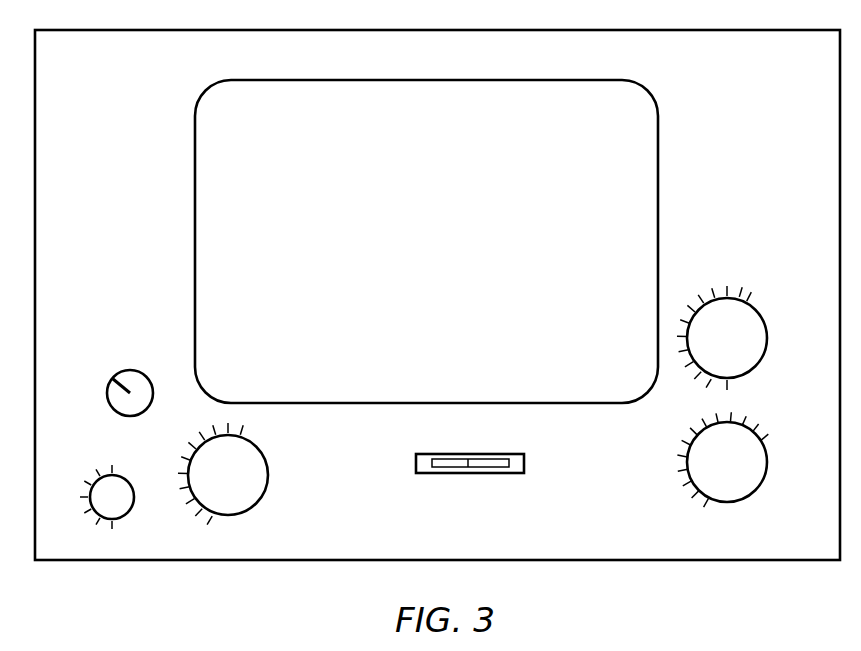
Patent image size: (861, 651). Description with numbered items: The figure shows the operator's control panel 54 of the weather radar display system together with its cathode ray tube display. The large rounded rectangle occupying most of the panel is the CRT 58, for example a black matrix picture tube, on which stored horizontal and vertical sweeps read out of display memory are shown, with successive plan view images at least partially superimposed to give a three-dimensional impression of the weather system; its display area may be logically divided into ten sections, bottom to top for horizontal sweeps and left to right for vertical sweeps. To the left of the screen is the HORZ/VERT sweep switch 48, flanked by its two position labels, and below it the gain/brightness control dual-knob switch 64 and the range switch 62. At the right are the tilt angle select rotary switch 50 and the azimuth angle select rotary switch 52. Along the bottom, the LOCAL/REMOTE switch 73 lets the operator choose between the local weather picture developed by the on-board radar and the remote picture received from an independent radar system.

The operator's control panel 54 is at (122, 126).
The cathode ray tube 58 is at (195, 185).
The HORZ/VERT sweep switch 48 is at (116, 412).
The gain/brightness control dual-knob switch 64 is at (126, 507).
The range switch 62 is at (243, 485).
The local/remote select switch 73 is at (462, 474).
The tilt angle select rotary switch 50 is at (742, 349).
The azimuth angle select rotary switch 52 is at (742, 473).